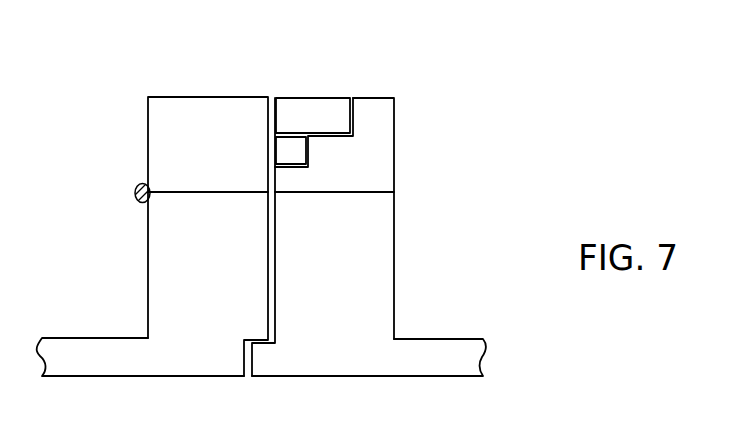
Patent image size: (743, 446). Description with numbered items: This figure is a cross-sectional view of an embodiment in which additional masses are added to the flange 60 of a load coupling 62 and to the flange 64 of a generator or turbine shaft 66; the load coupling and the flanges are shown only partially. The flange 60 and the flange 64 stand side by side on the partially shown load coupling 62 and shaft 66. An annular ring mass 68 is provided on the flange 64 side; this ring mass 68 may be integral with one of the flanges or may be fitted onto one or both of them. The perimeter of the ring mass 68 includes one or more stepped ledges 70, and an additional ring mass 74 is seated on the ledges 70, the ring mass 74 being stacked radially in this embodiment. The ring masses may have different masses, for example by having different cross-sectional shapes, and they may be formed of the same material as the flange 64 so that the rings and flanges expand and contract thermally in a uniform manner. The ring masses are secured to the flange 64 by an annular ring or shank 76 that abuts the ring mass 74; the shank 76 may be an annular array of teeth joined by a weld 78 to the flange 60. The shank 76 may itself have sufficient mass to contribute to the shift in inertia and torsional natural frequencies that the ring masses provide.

The flange 60 is at (223, 279).
The load coupling 62 is at (175, 368).
The flange 64 is at (344, 282).
The generator or turbine shaft 66 is at (428, 363).
The annular ring mass 68 is at (380, 180).
The stepped ledge 70 is at (288, 168).
The ring mass 74 is at (290, 148).
The annular ring or shank 76 is at (224, 155).
The weld 78 is at (137, 186).